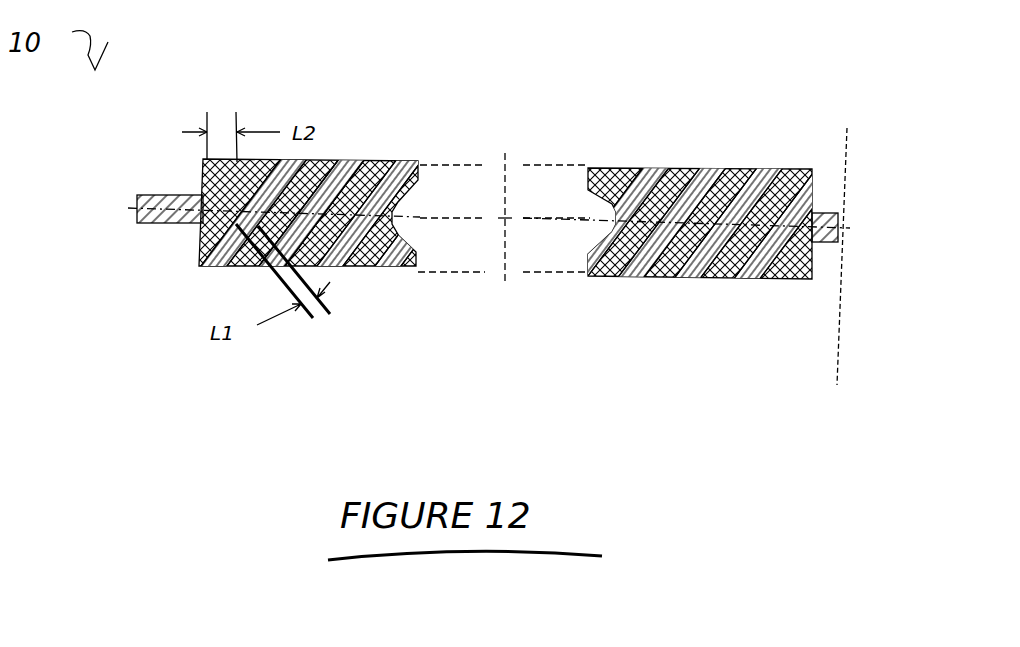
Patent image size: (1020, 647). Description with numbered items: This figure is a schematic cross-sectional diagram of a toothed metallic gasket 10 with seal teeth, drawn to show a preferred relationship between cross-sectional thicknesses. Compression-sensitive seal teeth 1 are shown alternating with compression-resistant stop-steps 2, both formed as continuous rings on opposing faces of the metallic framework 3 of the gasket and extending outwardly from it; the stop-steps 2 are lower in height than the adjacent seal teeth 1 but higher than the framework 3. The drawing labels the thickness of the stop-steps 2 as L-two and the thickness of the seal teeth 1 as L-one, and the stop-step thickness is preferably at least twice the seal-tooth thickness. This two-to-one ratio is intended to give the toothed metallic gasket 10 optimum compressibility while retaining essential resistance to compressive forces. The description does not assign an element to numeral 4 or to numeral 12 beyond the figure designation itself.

The compression-sensitive seal teeth 1 is at (406, 165).
The compression-resistant stop-steps 2 is at (386, 270).
The metallic framework 3 is at (822, 247).
The second housing block 4 is at (771, 168).
The toothed metallic gasket 10 is at (274, 209).
The joint 12 is at (520, 200).